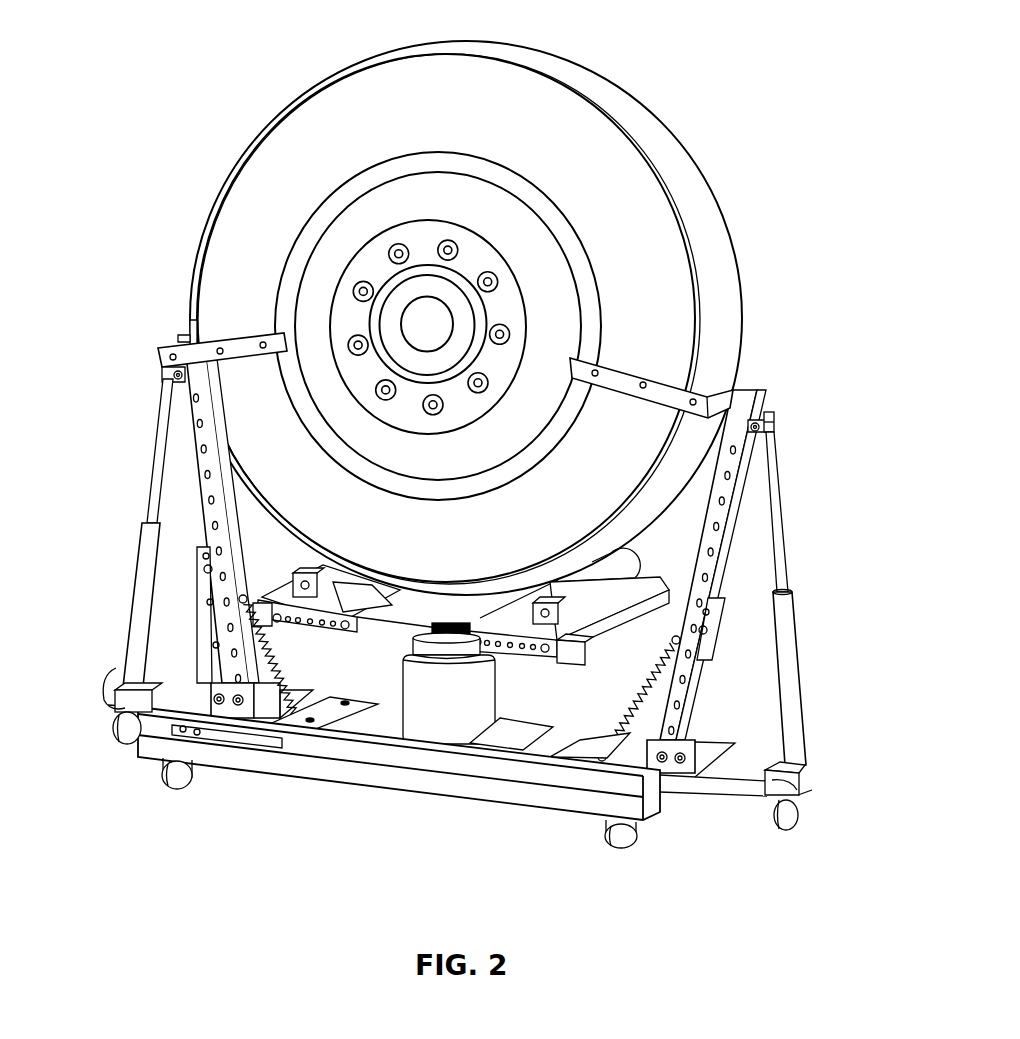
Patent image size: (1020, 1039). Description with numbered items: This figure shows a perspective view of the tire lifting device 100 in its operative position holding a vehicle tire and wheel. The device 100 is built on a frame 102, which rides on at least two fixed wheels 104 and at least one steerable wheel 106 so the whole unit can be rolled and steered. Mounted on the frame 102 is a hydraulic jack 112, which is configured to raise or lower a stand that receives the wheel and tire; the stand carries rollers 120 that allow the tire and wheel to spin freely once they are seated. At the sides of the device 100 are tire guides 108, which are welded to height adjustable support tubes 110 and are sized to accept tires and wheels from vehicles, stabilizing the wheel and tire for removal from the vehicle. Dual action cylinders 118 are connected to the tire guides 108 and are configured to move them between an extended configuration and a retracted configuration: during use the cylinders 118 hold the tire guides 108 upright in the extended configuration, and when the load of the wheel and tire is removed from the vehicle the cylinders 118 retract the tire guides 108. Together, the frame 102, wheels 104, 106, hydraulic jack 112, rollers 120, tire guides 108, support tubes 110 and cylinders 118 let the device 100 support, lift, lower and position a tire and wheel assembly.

The device 100 is at (726, 58).
The frame 102 is at (513, 740).
The fixed wheels 104 is at (788, 830).
The steerable wheel 106 is at (625, 848).
The tire guides 108 is at (166, 348).
The height adjustable support tubes 110 is at (197, 463).
The hydraulic jack 112 is at (430, 693).
The dual action cylinders 118 is at (138, 554).
The rollers 120 is at (300, 572).